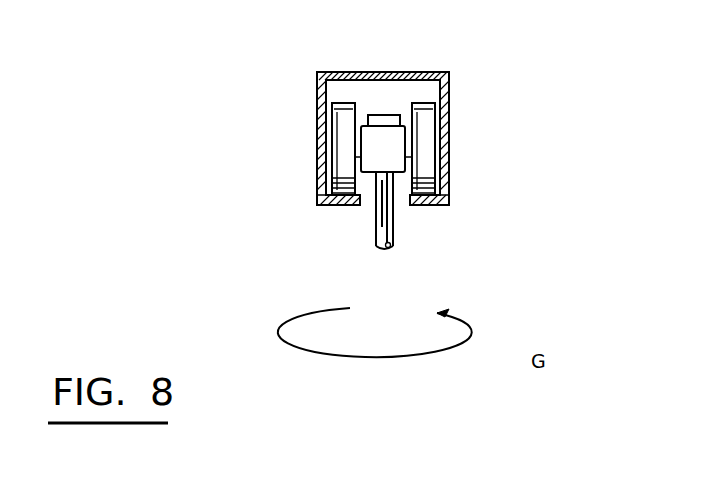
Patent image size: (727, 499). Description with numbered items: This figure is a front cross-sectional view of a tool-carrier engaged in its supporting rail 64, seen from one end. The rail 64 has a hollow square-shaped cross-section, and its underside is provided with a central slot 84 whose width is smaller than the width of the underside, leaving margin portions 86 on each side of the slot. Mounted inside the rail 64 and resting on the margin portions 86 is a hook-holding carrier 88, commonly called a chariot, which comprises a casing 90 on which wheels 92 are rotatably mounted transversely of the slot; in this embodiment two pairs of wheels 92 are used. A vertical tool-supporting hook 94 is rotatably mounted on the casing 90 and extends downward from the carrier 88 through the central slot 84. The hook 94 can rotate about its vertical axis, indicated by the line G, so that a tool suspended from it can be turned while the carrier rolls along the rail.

The rail 64 is at (403, 72).
The central slot 84 is at (400, 202).
The margin portions 86 is at (330, 205).
The hook-holding carrier 88 is at (392, 115).
The casing 90 is at (395, 160).
The wheels 92 is at (318, 156).
The tool-supporting hook 94 is at (395, 238).